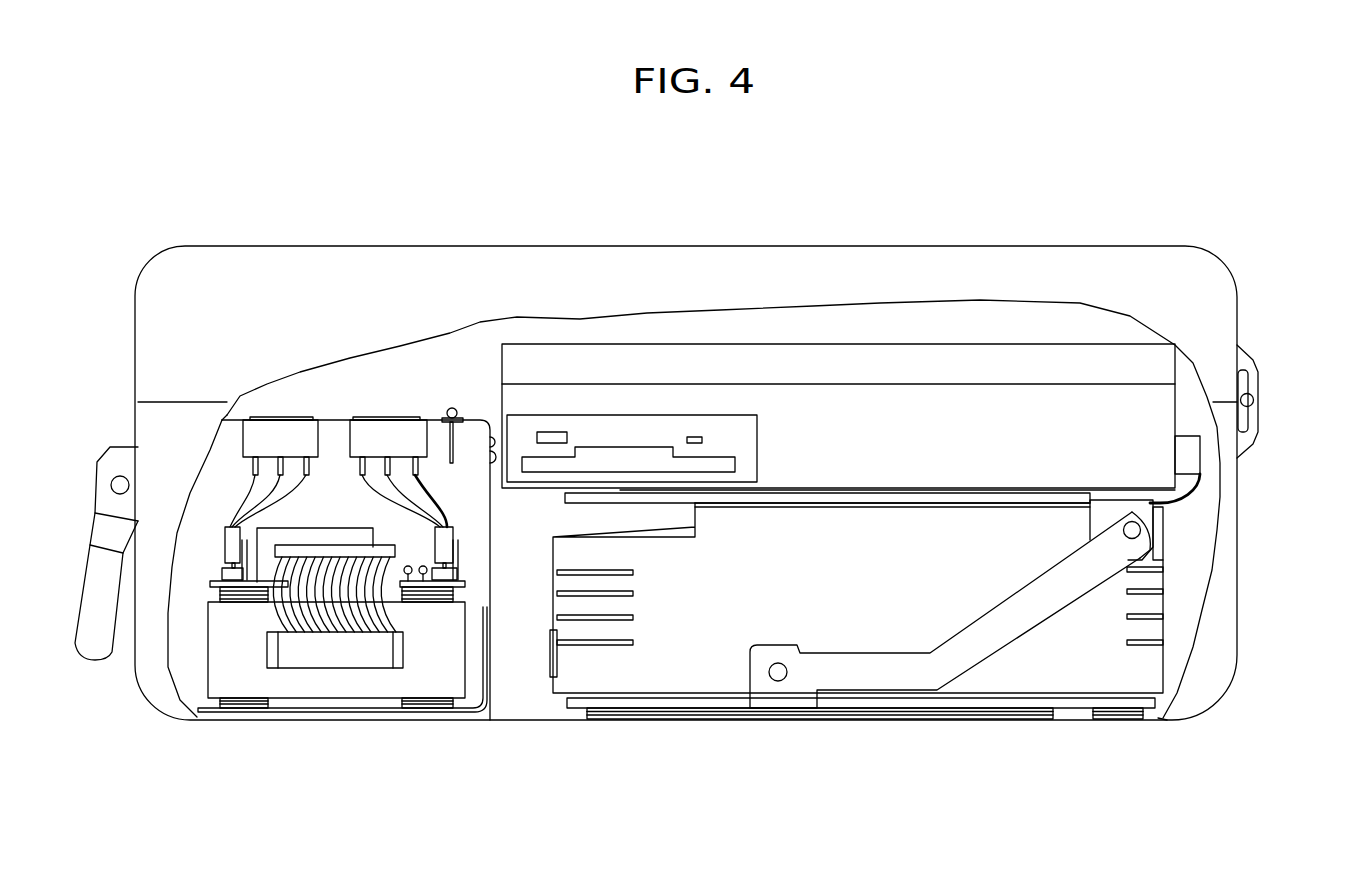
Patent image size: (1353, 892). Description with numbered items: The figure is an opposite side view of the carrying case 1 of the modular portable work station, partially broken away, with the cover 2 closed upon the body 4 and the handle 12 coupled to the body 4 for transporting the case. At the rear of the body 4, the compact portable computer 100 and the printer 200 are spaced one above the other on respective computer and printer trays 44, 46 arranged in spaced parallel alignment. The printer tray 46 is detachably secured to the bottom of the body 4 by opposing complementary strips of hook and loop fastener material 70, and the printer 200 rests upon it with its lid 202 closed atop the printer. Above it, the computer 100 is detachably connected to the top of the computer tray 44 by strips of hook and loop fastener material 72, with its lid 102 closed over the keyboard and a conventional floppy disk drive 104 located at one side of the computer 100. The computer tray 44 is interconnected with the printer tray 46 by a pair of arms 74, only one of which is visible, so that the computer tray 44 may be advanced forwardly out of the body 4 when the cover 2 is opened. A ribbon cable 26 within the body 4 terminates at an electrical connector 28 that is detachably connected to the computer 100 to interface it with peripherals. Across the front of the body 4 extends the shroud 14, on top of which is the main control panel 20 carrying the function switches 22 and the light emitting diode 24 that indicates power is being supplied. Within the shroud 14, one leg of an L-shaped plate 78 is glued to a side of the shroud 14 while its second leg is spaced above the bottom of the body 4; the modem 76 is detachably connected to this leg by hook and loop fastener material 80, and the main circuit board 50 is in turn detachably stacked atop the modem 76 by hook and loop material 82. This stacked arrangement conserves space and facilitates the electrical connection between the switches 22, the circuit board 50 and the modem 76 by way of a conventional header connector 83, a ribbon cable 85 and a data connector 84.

The carrying case 1 is at (1243, 268).
The cover 2 is at (1043, 243).
The body 4 is at (1220, 708).
The handle 12 is at (103, 628).
The shroud 14 is at (237, 417).
The main control panel 20 is at (338, 420).
The function switches 22 is at (272, 436).
The light emitting diode 24 is at (453, 409).
The ribbon cable 26 is at (1185, 495).
The electrical connector 28 is at (1188, 455).
The computer tray 44 is at (915, 495).
The printer tray 46 is at (1030, 702).
The main circuit board 50 is at (463, 577).
The hook and loop fastener material 70 is at (900, 713).
The hook and loop fastener material 72 is at (995, 487).
The arms 74 is at (982, 633).
The modem 76 is at (313, 683).
The L-shaped plate 78 is at (490, 692).
The hook and loop fastener material 80 is at (240, 708).
The hook and loop material 82 is at (217, 590).
The header connector 83 is at (340, 527).
The data connector 84 is at (350, 653).
The ribbon cable 85 is at (322, 607).
The compact portable computer 100 is at (890, 400).
The lid 102 is at (1043, 367).
The floppy disk drive 104 is at (643, 413).
The printer 200 is at (687, 660).
The lid 202 is at (865, 518).